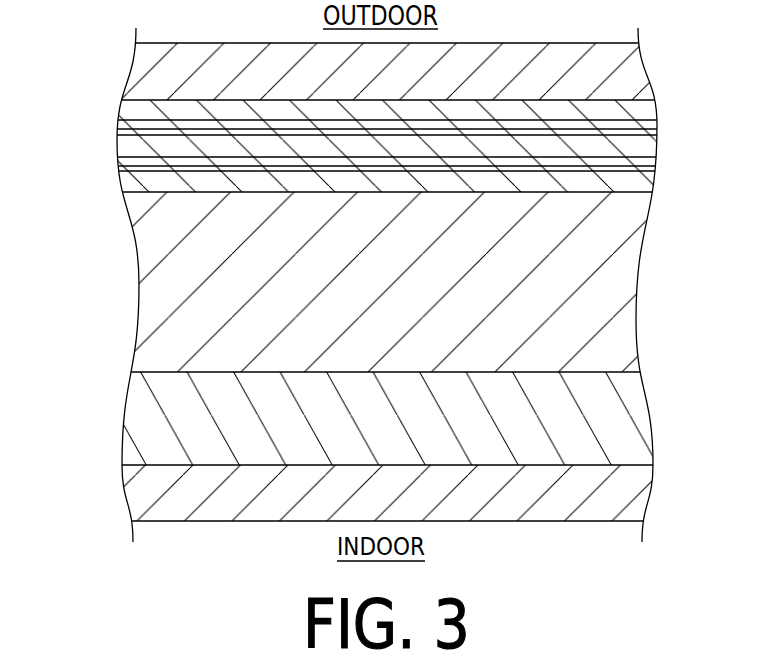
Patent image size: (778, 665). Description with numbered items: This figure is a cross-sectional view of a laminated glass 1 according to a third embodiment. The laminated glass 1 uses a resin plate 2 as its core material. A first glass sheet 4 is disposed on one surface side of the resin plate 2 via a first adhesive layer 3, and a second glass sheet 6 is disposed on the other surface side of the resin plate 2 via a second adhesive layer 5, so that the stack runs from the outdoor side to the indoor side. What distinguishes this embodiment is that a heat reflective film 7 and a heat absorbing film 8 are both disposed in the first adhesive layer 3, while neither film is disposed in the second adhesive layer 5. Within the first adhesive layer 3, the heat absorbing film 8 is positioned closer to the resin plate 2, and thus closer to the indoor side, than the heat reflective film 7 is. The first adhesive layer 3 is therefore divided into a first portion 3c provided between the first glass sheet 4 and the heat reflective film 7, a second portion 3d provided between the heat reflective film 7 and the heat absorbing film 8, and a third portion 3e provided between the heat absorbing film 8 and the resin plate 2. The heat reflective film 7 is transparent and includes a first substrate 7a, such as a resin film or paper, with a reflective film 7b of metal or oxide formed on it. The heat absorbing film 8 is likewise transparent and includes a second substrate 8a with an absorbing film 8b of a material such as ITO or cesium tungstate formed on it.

The laminated glass 1 is at (686, 52).
The resin plate 2 is at (612, 270).
The first adhesive layer 3 is at (389, 152).
The first portion 3c is at (649, 108).
The second portion 3d is at (649, 145).
The third portion 3e is at (411, 184).
The first glass sheet 4 is at (523, 52).
The second adhesive layer 5 is at (632, 412).
The second glass sheet 6 is at (542, 507).
The heat reflective film 7 is at (349, 121).
The first substrate 7a is at (117, 124).
The reflective film 7b is at (117, 132).
The heat absorbing film 8 is at (349, 184).
The second substrate 8a is at (117, 161).
The absorbing film 8b is at (121, 178).